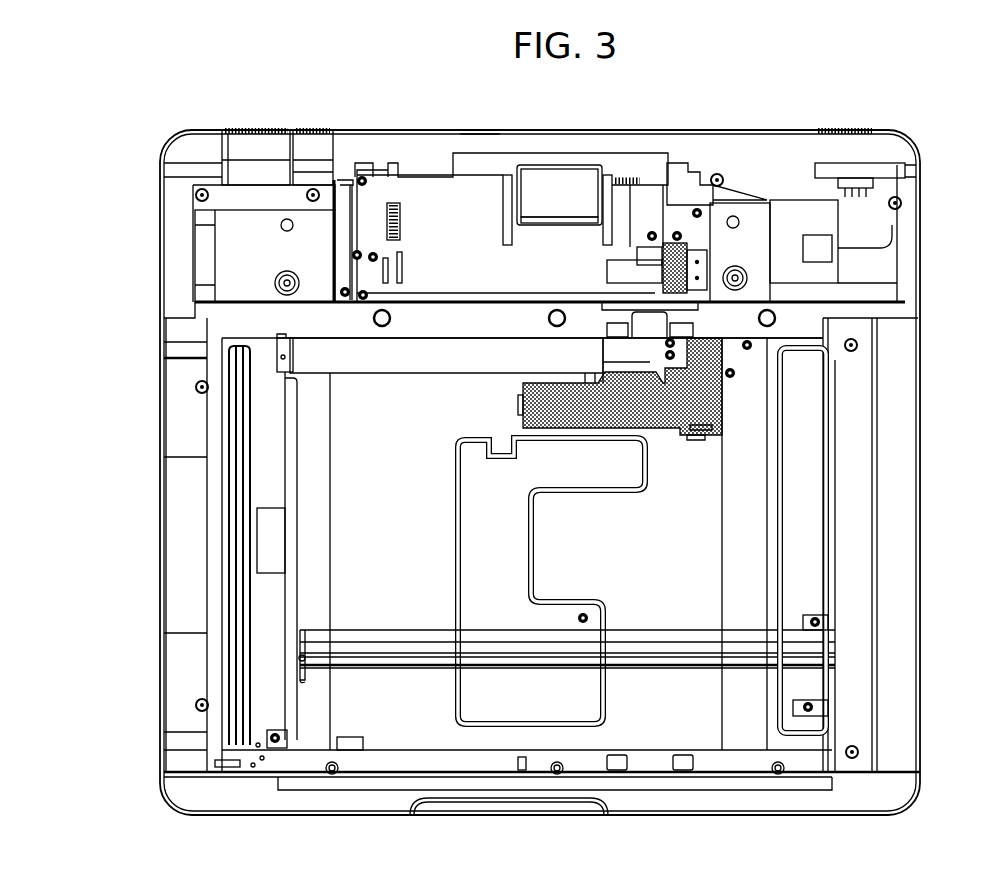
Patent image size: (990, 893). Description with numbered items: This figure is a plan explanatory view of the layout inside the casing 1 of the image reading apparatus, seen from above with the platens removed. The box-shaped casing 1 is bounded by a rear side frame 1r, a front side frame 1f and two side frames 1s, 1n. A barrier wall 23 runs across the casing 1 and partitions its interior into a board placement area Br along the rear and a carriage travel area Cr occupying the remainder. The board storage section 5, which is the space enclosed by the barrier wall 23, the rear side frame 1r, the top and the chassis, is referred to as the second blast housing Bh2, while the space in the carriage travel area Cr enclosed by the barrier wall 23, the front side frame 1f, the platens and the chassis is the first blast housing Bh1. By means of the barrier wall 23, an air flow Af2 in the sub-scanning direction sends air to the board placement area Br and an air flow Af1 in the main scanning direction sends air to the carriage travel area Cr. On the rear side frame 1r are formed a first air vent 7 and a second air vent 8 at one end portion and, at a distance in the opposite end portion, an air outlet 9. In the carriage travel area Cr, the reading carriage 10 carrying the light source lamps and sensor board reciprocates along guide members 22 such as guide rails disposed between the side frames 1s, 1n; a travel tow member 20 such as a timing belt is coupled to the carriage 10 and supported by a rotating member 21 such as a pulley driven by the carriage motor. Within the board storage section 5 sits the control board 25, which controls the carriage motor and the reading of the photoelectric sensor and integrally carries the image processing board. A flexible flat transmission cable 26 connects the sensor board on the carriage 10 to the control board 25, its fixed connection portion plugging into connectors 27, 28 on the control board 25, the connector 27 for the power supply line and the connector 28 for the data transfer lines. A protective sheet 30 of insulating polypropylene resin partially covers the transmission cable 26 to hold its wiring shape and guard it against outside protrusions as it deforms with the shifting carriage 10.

The casing 1 is at (144, 397).
The side frame 1n is at (163, 616).
The side frame 1s is at (921, 678).
The front side frame 1f is at (761, 816).
The rear side frame 1r is at (481, 134).
The board storage section 5 is at (694, 160).
The first air vent 7 is at (249, 131).
The second air vent 8 is at (305, 130).
The air outlet 9 is at (845, 131).
The reading carriage 10 is at (276, 466).
The travel tow member 20 is at (647, 667).
The rotating member 21 is at (305, 658).
The guide members 22 is at (678, 632).
The barrier wall 23 is at (488, 314).
The control board 25 is at (410, 196).
The transmission cable 26 is at (406, 374).
The connector 27 is at (636, 248).
The connector 28 is at (606, 268).
The protective sheet 30 is at (666, 434).
The first blast housing Bh1 is at (391, 543).
The second blast housing Bh2 is at (382, 150).
The air flow Af1 is at (248, 296).
The air flow Af2 is at (313, 238).
The board placement area Br is at (950, 130).
The carriage travel area Cr is at (950, 815).